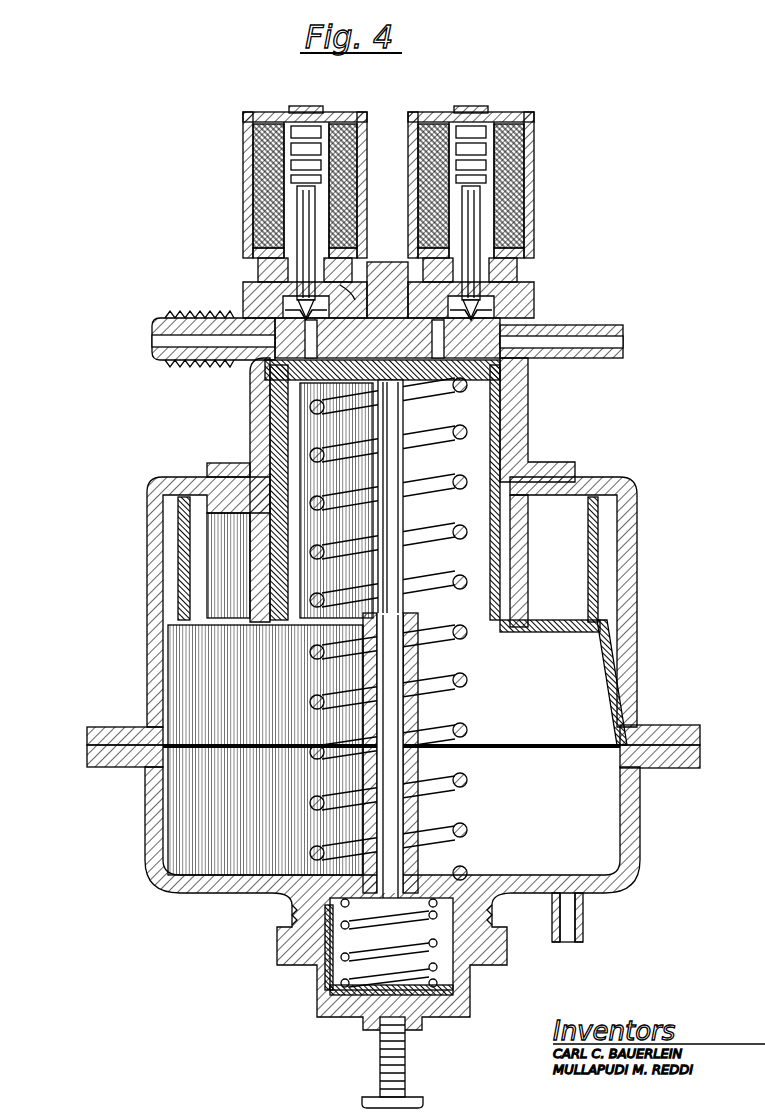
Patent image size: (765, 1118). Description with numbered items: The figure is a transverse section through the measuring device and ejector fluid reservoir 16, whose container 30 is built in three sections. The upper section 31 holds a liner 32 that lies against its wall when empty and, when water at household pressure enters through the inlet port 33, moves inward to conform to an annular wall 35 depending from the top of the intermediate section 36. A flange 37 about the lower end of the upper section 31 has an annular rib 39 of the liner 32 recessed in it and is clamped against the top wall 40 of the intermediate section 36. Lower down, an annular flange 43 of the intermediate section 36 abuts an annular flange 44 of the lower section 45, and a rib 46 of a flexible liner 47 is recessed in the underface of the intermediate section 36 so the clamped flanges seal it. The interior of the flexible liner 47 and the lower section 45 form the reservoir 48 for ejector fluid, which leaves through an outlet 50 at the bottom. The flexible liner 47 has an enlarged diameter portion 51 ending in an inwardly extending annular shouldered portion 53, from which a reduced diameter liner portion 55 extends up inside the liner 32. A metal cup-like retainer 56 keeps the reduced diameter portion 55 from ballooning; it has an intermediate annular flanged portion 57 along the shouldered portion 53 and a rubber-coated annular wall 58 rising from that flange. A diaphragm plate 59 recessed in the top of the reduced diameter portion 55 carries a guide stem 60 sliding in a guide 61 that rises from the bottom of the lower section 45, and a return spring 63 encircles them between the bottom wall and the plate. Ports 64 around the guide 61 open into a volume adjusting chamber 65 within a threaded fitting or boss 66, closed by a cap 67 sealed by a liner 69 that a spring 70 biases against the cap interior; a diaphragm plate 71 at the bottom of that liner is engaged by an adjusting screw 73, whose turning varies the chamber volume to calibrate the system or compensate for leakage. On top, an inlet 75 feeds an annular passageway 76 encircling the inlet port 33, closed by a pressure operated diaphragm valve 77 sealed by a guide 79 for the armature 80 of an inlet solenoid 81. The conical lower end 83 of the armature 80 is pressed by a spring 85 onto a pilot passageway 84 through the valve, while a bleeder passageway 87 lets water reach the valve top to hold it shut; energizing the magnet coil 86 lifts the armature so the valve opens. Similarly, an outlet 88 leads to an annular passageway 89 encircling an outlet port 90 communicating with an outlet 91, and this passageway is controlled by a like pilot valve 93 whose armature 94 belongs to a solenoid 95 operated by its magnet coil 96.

The measuring device and ejector fluid reservoir 16 is at (638, 540).
The container 30 is at (150, 645).
The upper section 31 is at (252, 400).
The liner 32 is at (520, 370).
The inlet port 33 is at (275, 380).
The annular wall 35 is at (520, 560).
The intermediate section 36 is at (150, 575).
The flange 37 is at (545, 465).
The annular rib 39 is at (236, 470).
The top wall 40 is at (585, 477).
The annular flange 43 is at (695, 727).
The annular flange 44 is at (700, 755).
The lower section 45 is at (148, 838).
The rib 46 is at (628, 735).
The flexible liner 47 is at (610, 625).
The reservoir 48 is at (630, 820).
The outlet 50 is at (585, 925).
The enlarged diameter portion 51 is at (612, 640).
The annular shouldered portion 53 is at (545, 632).
The reduced diameter liner portion 55 is at (530, 400).
The cup-like retainer 56 is at (496, 630).
The intermediate annular flanged portion 57 is at (548, 622).
The annular wall 58 is at (598, 500).
The diaphragm plate 59 is at (412, 405).
The guide stem 60 is at (395, 470).
The guide 61 is at (420, 720).
The return spring 63 is at (465, 782).
The ports 64 is at (292, 905).
The volume adjusting chamber 65 is at (455, 935).
The threaded fitting or boss 66 is at (292, 922).
The cap 67 is at (470, 1010).
The liner 69 is at (340, 992).
The spring 70 is at (325, 975).
The diaphragm plate 71 is at (340, 1010).
The adjusting screw 73 is at (405, 1075).
The inlet 75 is at (165, 340).
The annular passageway 76 is at (256, 315).
The pressure operated diaphragm valve 77 is at (250, 295).
The guide 79 is at (355, 295).
The armature 80 is at (300, 208).
The inlet solenoid 81 is at (248, 170).
The conical lower end 83 is at (258, 268).
The pilot passageway 84 is at (258, 360).
The spring 85 is at (312, 150).
The magnet coil 86 is at (265, 150).
The bleeder passageway 87 is at (330, 300).
The outlet 88 is at (540, 320).
The annular passageway 89 is at (520, 305).
The outlet port 90 is at (465, 392).
The outlet 91 is at (600, 327).
The pilot valve 93 is at (385, 262).
The armature 94 is at (470, 252).
The solenoid 95 is at (528, 170).
The magnet coil 96 is at (510, 150).